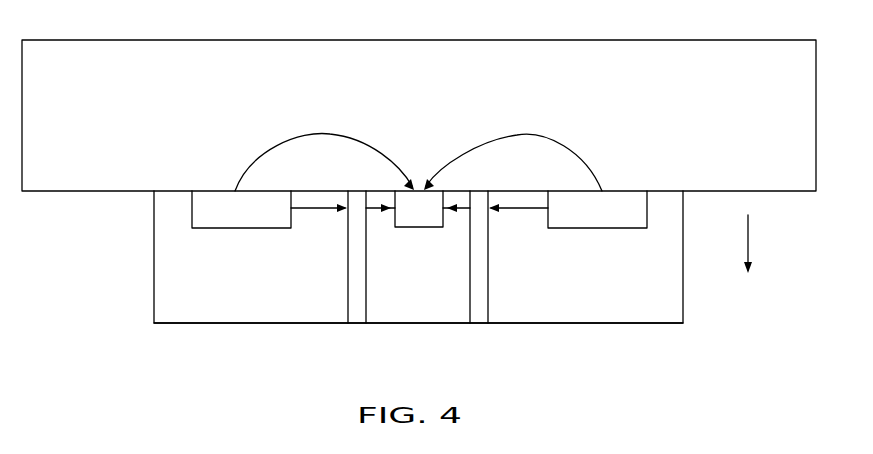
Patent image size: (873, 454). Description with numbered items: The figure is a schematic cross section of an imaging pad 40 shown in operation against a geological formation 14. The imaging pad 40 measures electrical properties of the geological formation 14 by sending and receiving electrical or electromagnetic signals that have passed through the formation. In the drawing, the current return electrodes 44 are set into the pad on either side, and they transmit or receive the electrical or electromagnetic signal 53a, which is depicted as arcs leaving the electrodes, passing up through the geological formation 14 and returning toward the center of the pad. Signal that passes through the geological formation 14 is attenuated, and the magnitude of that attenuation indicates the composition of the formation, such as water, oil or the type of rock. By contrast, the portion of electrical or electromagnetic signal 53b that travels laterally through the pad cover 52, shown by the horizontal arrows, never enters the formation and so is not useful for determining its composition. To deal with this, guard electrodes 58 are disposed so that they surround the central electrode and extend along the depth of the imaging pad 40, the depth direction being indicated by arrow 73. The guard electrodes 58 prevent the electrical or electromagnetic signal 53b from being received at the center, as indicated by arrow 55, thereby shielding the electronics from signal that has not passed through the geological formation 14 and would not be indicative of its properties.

The geological formation 14 is at (800, 132).
The imaging pad 40 is at (154, 303).
The current return electrodes 44 is at (242, 228).
The pad cover 52 is at (275, 303).
The electrical or electromagnetic signal 53a is at (320, 135).
The electrical or electromagnetic signal 53b is at (314, 210).
The arrow 55 is at (451, 216).
The guard electrodes 58 is at (367, 280).
The arrow 73 is at (748, 237).